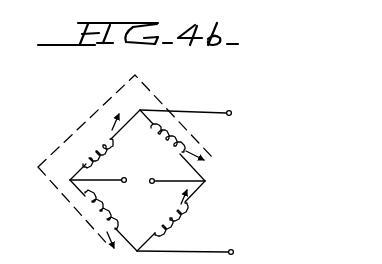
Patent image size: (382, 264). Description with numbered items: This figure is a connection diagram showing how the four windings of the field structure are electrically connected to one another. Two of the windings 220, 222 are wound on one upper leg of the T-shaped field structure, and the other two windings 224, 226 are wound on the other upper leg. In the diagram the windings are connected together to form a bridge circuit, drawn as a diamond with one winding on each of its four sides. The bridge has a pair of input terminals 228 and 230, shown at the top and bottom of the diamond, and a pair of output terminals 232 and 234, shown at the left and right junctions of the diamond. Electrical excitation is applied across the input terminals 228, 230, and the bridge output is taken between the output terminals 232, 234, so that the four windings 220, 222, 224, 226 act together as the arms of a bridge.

The winding 220 is at (112, 217).
The winding 222 is at (173, 146).
The winding 224 is at (182, 220).
The winding 226 is at (93, 138).
The input terminal 228 is at (233, 113).
The input terminal 230 is at (238, 255).
The output terminal 232 is at (109, 170).
The output terminal 234 is at (167, 194).